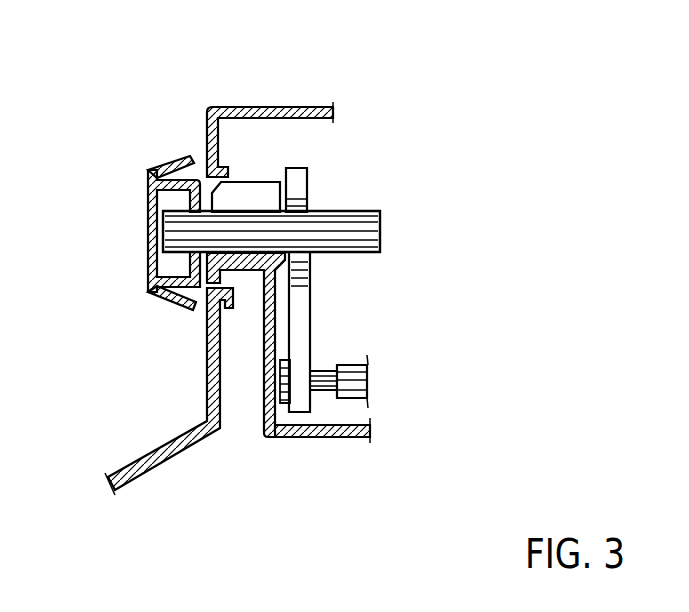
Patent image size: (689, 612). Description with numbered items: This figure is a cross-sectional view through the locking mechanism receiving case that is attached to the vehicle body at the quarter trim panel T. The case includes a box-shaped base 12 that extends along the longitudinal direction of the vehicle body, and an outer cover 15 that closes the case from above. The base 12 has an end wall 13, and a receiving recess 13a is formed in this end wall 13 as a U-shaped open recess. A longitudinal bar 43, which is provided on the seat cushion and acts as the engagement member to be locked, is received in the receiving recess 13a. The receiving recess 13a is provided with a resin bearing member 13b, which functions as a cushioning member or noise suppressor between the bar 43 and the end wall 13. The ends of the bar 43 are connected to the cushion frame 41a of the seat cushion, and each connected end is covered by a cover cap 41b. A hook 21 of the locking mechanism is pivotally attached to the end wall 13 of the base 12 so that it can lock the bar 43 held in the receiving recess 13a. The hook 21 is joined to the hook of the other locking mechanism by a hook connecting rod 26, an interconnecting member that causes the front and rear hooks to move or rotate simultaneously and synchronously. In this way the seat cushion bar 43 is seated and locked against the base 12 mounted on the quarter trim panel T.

The base 12 is at (350, 440).
The end wall 13 is at (263, 350).
The receiving recess 13a is at (248, 173).
The resin bearing member 13b is at (252, 190).
The outer cover 15 is at (268, 106).
The hook 21 is at (303, 300).
The hook connecting rod 26 is at (357, 374).
The cushion frame 41a is at (167, 182).
The cover cap 41b is at (148, 185).
The bar 43 is at (357, 209).
The quarter trim panel T is at (150, 455).